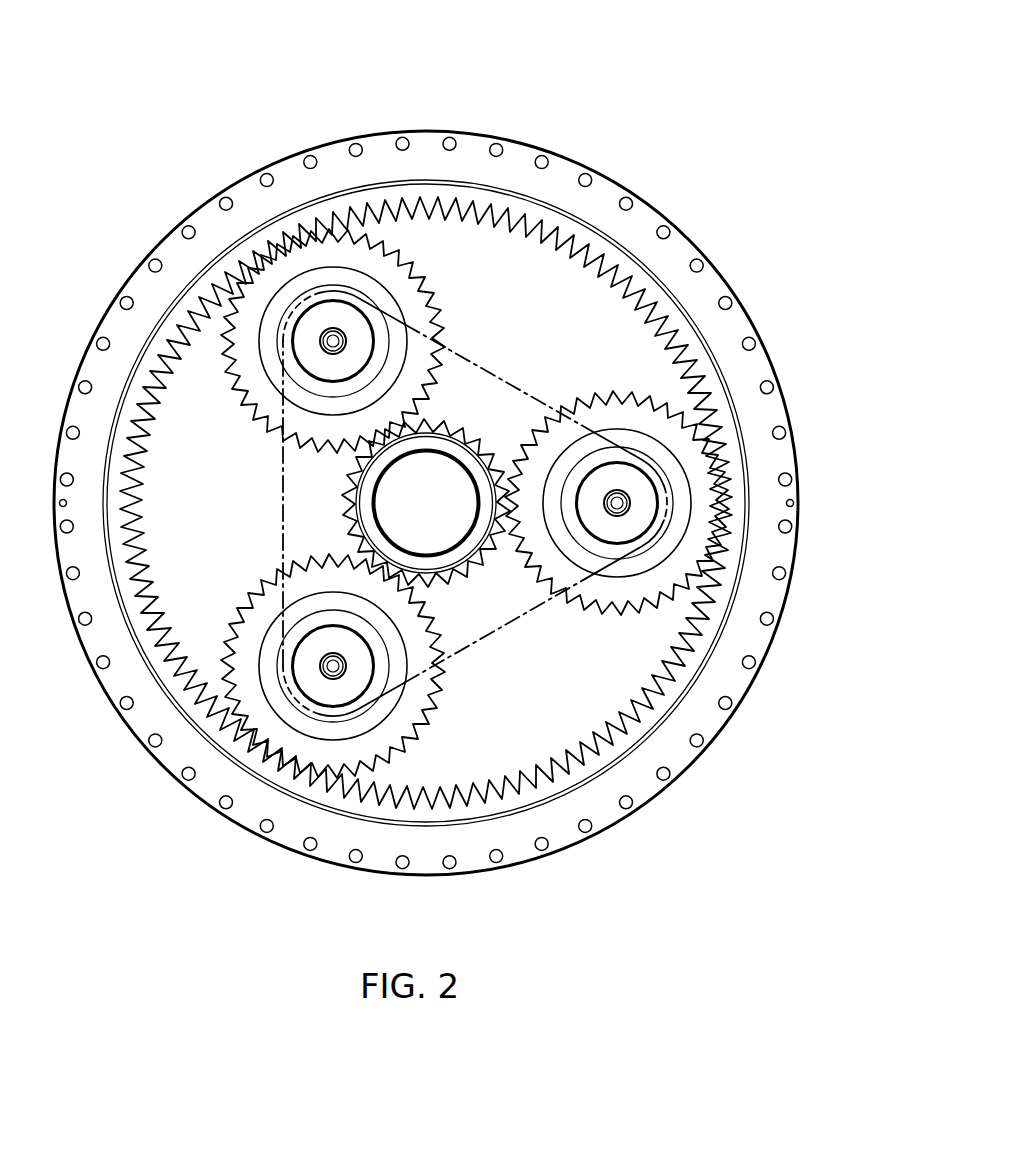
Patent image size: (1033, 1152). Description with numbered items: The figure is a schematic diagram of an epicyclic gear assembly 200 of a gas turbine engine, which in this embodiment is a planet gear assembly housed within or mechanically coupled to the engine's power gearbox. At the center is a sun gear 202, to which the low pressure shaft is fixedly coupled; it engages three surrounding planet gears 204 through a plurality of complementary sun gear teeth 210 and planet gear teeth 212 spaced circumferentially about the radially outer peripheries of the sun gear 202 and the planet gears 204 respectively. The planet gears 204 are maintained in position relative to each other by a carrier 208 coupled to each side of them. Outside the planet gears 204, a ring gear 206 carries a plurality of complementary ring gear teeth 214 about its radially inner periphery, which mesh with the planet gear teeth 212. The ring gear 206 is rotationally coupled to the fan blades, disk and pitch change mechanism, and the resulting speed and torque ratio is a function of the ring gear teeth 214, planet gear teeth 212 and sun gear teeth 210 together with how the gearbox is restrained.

The epicyclic gear assembly 200 is at (597, 66).
The sun gear 202 is at (456, 540).
The planet gears 204 is at (318, 302).
The ring gear 206 is at (690, 231).
The carrier 208 is at (497, 630).
The sun gear teeth 210 is at (345, 490).
The planet gear teeth 212 is at (455, 327).
The ring gear teeth 214 is at (633, 285).